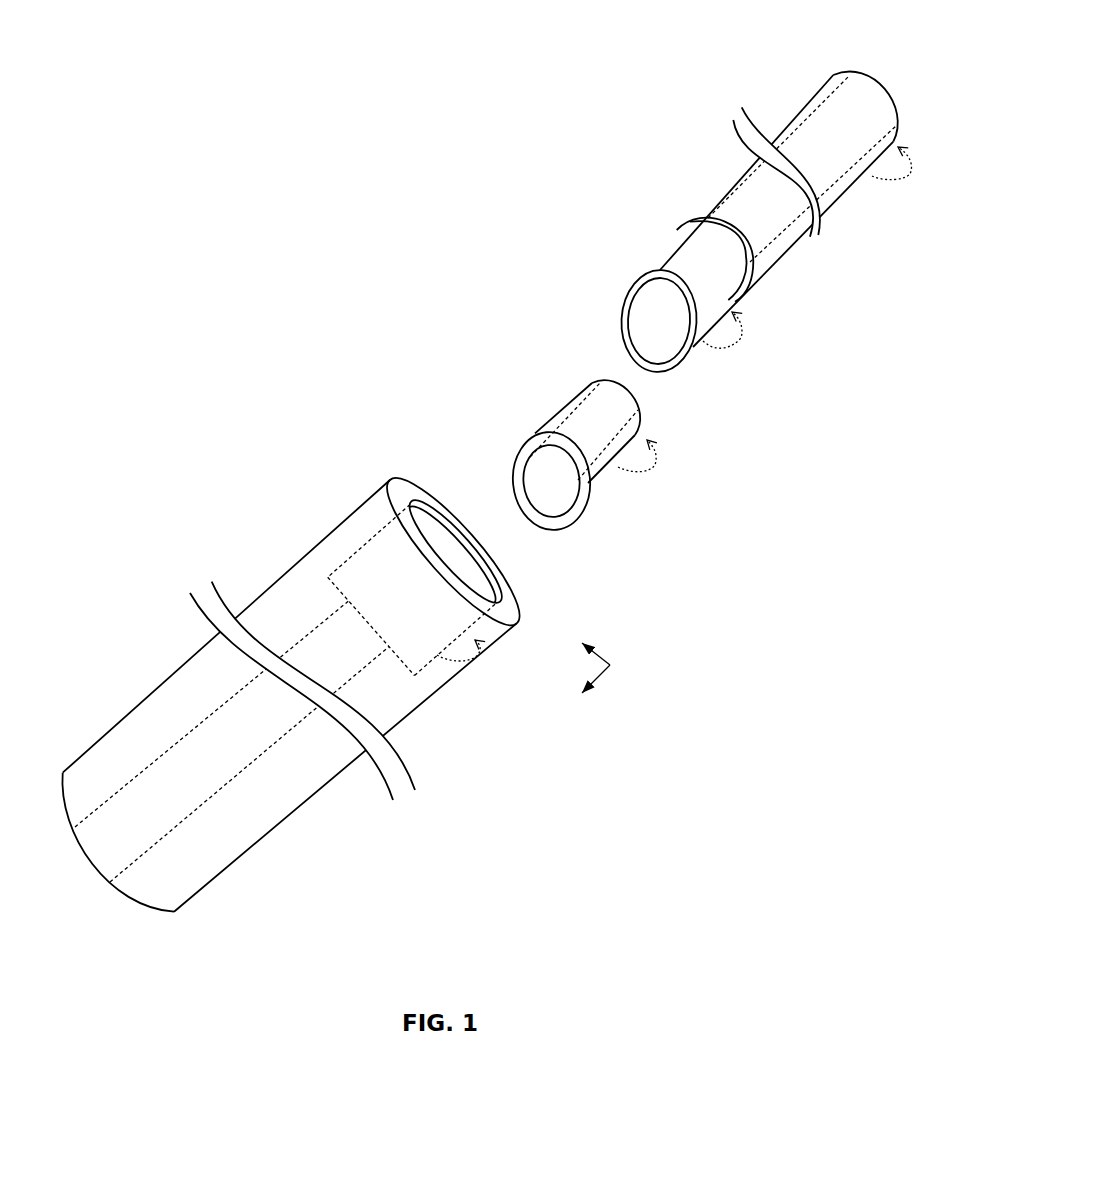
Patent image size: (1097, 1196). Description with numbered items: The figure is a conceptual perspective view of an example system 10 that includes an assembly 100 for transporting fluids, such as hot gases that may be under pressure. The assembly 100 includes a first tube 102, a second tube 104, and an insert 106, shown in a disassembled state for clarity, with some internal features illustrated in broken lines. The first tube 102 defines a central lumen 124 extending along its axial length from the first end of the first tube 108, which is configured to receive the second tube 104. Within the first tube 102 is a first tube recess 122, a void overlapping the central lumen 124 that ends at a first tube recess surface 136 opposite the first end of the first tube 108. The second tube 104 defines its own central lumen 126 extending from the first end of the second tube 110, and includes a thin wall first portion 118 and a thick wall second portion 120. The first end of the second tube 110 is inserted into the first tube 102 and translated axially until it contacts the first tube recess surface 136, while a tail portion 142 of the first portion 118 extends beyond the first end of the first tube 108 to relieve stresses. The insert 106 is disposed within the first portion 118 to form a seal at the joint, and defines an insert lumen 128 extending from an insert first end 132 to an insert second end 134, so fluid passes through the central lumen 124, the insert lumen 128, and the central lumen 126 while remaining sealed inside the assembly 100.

The system 10 is at (501, 467).
The assembly 100 is at (501, 467).
The first tube 102 is at (330, 683).
The second tube 104 is at (744, 198).
The insert 106 is at (612, 433).
The first end of the first tube 108 is at (508, 605).
The first end of the second tube 110 is at (647, 272).
The first portion 118 is at (682, 217).
The second portion 120 is at (777, 250).
The first tube recess 122 is at (412, 603).
The central lumen 124 is at (213, 763).
The central lumen 126 is at (815, 130).
The insert lumen 128 is at (582, 442).
The insert first end 132 is at (588, 380).
The insert second end 134 is at (533, 435).
The first tube recess surface 136 is at (400, 657).
The tail portion 142 is at (712, 240).